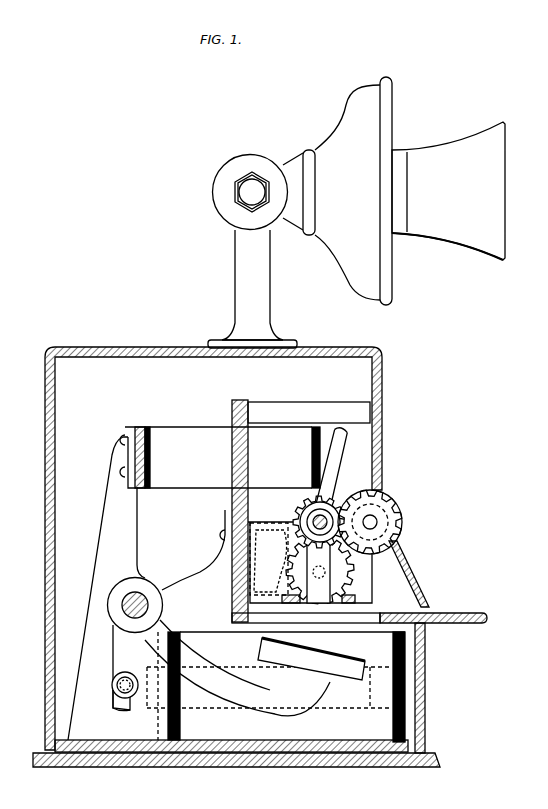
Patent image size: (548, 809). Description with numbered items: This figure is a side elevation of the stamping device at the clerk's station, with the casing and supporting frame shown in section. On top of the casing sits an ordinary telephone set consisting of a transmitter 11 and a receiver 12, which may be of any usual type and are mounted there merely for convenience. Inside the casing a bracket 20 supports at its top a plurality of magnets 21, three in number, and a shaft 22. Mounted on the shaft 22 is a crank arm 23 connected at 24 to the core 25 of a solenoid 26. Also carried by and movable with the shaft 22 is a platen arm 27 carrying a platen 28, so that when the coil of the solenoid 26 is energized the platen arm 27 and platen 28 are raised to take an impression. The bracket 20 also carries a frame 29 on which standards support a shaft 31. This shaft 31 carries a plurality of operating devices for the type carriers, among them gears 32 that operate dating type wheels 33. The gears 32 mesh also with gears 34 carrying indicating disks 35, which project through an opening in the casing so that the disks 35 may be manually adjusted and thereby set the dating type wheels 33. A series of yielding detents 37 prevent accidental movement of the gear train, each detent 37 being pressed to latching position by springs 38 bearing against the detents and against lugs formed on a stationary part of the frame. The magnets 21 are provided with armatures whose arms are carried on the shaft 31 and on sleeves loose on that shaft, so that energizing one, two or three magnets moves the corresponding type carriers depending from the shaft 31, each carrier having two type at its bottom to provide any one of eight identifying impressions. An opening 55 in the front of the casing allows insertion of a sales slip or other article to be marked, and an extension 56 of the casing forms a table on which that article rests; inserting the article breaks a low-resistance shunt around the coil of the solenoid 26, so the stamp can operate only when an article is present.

The transmitter 11 is at (455, 142).
The receiver 12 is at (45, 483).
The bracket 20 is at (97, 562).
The magnets 21 is at (166, 427).
The shaft 22 is at (150, 585).
The crank arm 23 is at (118, 666).
The connection 24 is at (122, 696).
The core 25 is at (157, 704).
The solenoid 26 is at (276, 687).
The platen arm 27 is at (205, 683).
The platen 28 is at (311, 658).
The frame 29 is at (384, 613).
The shaft 31 is at (338, 506).
The gears 32 is at (303, 513).
The dating type wheels 33 is at (284, 522).
The gears 34 is at (395, 510).
The indicating disks 35 is at (403, 518).
The yielding detents 37 is at (335, 578).
The springs 38 is at (269, 559).
The opening 55 is at (428, 610).
The extension 56 is at (466, 624).